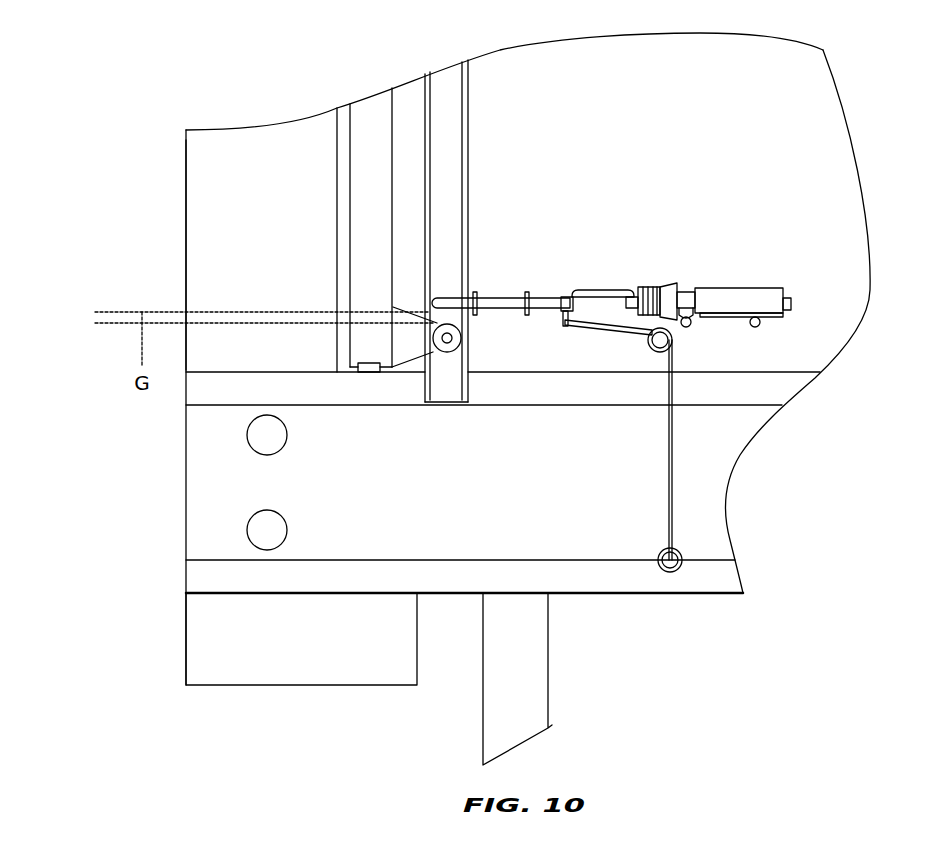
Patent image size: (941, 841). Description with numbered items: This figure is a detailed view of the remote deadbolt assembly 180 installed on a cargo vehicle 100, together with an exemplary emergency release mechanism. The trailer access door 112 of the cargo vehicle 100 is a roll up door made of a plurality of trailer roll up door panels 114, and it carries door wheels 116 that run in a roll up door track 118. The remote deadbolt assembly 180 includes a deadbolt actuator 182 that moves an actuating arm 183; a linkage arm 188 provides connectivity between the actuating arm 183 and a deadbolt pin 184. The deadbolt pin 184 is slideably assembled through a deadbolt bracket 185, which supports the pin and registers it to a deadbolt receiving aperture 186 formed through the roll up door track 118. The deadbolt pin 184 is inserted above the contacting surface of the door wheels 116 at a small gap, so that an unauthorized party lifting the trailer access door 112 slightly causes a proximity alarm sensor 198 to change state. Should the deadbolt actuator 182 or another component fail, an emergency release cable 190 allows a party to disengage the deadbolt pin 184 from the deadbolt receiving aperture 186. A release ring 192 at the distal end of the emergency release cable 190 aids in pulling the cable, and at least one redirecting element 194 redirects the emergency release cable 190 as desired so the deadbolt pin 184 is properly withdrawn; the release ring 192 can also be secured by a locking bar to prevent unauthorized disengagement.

The cargo vehicle 100 is at (828, 473).
The trailer access door 112 is at (186, 231).
The trailer roll up door panels 114 is at (350, 213).
The door wheels 116 is at (453, 353).
The roll up door track 118 is at (468, 135).
The remote deadbolt assembly 180 is at (741, 336).
The deadbolt actuator 182 is at (740, 289).
The actuating arm 183 is at (637, 290).
The deadbolt pin 184 is at (500, 297).
The deadbolt bracket 185 is at (529, 314).
The deadbolt receiving aperture 186 is at (474, 291).
The linkage arm 188 is at (600, 290).
The emergency release cable 190 is at (668, 477).
The release ring 192 is at (683, 566).
The redirecting element 194 is at (672, 343).
The proximity alarm sensor 198 is at (372, 373).